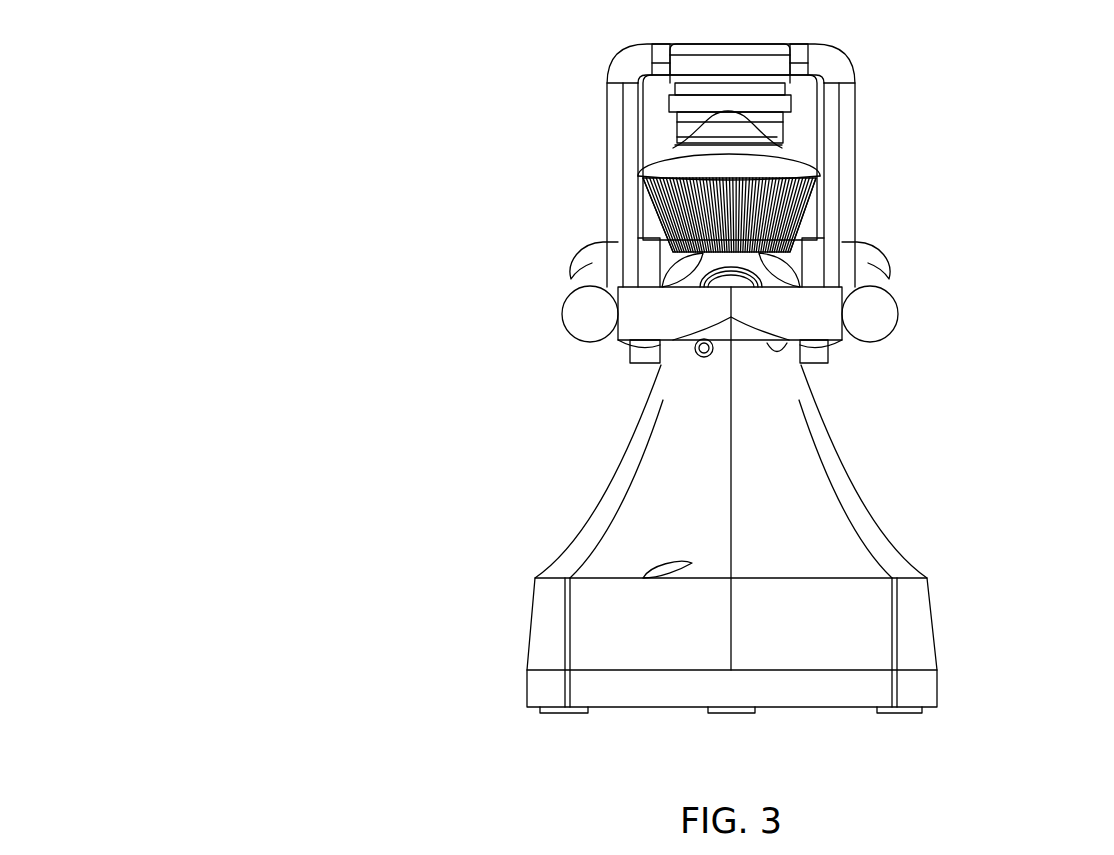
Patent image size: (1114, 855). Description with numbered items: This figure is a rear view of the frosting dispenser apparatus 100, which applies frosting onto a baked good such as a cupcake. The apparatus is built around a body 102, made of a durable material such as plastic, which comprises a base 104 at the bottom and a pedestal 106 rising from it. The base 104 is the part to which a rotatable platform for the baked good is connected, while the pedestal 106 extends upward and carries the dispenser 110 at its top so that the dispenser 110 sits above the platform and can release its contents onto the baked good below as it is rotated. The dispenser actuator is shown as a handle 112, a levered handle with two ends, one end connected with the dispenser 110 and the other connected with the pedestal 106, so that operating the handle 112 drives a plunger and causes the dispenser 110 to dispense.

The frosting dispenser apparatus 100 is at (290, 66).
The body 102 is at (924, 607).
The base 104 is at (527, 693).
The pedestal 106 is at (838, 472).
The dispenser 110 is at (672, 113).
The handle 112 is at (898, 303).